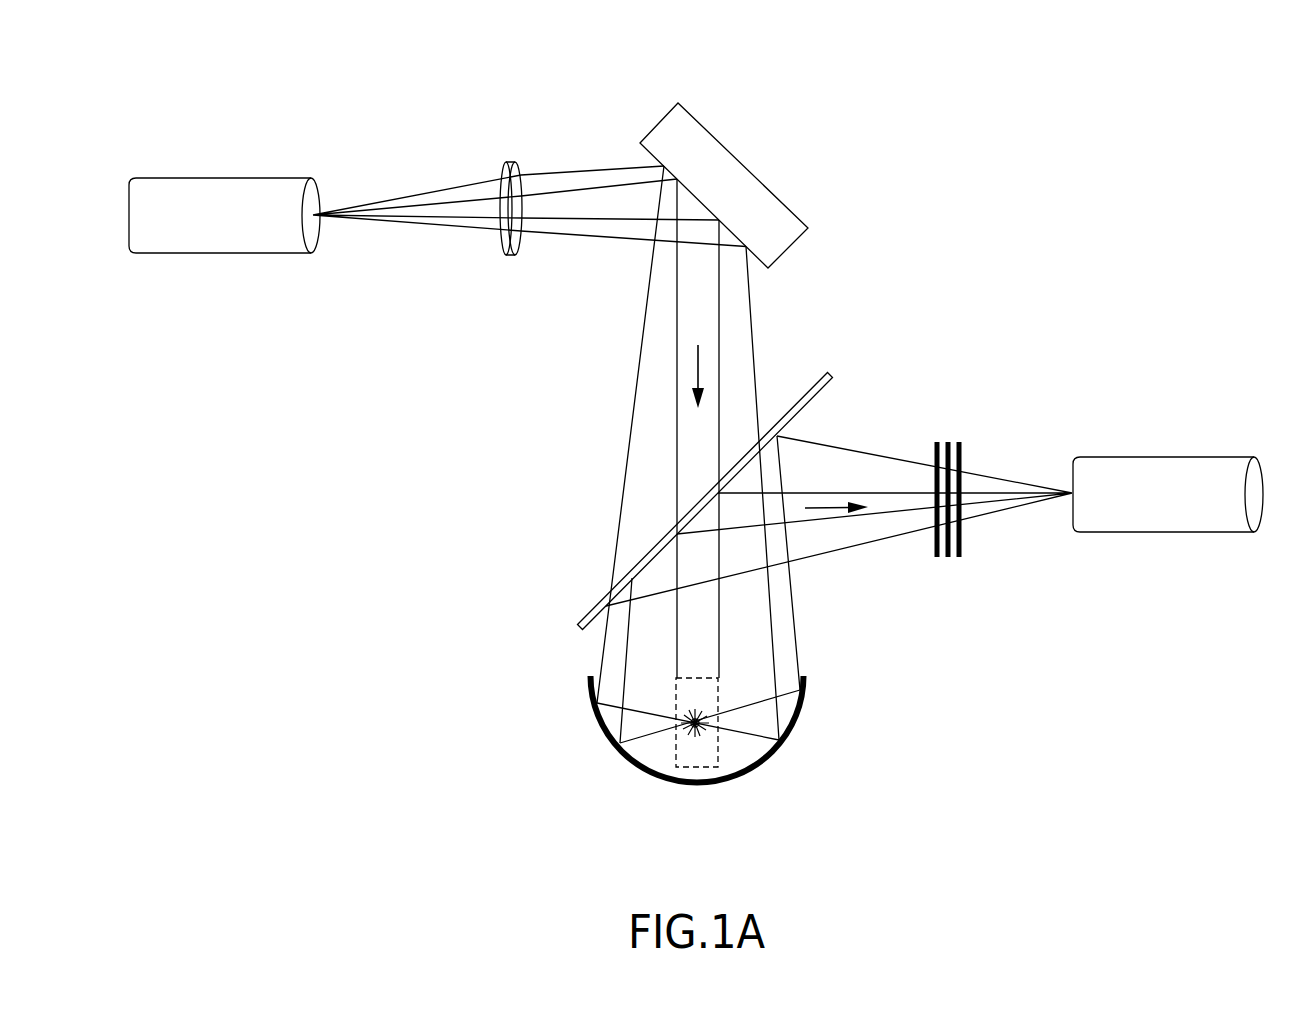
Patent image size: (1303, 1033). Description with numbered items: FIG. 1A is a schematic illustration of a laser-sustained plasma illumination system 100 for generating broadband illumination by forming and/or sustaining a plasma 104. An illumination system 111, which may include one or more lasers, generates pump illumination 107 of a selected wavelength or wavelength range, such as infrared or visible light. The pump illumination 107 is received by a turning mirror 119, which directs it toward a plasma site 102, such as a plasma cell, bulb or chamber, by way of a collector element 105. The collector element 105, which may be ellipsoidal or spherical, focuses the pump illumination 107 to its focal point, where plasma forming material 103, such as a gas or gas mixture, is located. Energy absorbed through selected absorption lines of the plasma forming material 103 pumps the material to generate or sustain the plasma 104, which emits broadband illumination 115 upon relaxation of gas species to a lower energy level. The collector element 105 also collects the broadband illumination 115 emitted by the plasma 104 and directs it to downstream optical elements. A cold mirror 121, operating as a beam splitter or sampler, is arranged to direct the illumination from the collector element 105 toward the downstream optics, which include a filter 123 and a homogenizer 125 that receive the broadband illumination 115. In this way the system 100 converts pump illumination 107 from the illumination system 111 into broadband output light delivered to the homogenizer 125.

The LSP illumination system 100 is at (172, 68).
The illumination system 111 is at (218, 255).
The pump illumination 107 is at (613, 232).
The turning mirror 119 is at (743, 162).
The plasma site 102 is at (655, 669).
The cold mirror 121 is at (603, 595).
The broadband illumination 115 is at (832, 543).
The filter 123 is at (947, 557).
The homogenizer 125 is at (1167, 532).
The collector element 105 is at (780, 738).
The plasma forming material 103 is at (722, 698).
The plasma 104 is at (692, 713).